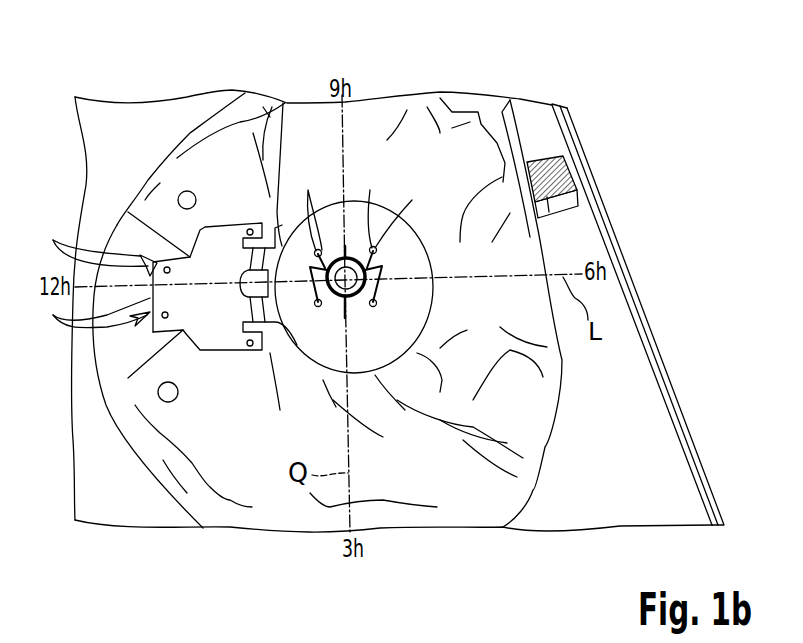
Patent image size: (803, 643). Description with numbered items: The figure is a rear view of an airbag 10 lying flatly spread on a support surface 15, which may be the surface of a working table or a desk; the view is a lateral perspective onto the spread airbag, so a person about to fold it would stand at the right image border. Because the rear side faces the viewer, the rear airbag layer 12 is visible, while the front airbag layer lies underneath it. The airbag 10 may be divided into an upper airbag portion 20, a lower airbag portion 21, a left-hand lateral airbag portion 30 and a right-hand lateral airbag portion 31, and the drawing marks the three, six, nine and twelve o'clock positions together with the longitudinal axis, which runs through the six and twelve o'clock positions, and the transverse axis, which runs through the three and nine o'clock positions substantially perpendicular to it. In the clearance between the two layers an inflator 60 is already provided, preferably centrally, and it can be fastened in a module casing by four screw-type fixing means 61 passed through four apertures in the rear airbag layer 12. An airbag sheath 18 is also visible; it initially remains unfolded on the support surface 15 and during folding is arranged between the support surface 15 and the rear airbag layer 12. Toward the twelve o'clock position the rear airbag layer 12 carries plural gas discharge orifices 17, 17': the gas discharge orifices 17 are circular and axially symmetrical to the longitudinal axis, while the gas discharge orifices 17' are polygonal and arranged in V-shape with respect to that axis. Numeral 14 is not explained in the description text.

The airbag 10 is at (189, 88).
The rear airbag layer 12 is at (533, 412).
The cushion panel 14 is at (227, 101).
The support surface 15 is at (634, 483).
The gas discharge orifices 17 is at (111, 271).
The gas discharge orifices 17' is at (90, 273).
The airbag sheath 18 is at (307, 352).
The upper airbag portion 20 is at (125, 233).
The lower airbag portion 21 is at (550, 360).
The left-hand lateral airbag portion 30 is at (312, 120).
The right-hand lateral airbag portion 31 is at (408, 527).
The inflator 60 is at (352, 258).
The fixing means 61 is at (317, 250).